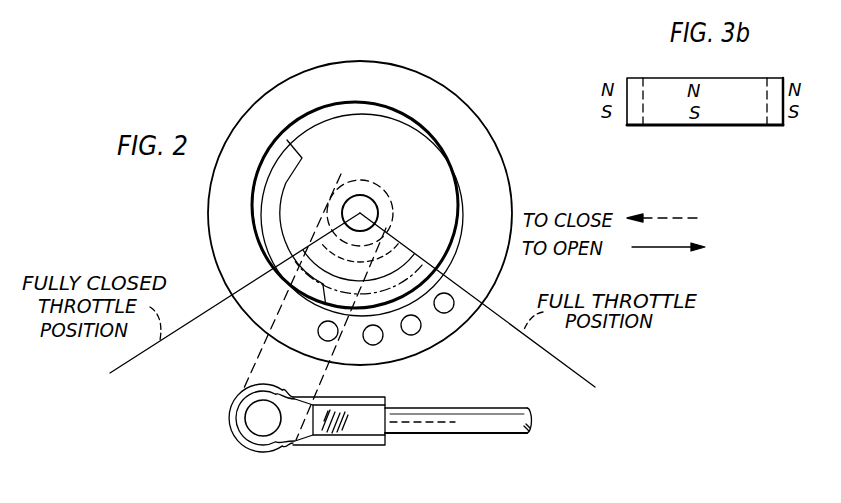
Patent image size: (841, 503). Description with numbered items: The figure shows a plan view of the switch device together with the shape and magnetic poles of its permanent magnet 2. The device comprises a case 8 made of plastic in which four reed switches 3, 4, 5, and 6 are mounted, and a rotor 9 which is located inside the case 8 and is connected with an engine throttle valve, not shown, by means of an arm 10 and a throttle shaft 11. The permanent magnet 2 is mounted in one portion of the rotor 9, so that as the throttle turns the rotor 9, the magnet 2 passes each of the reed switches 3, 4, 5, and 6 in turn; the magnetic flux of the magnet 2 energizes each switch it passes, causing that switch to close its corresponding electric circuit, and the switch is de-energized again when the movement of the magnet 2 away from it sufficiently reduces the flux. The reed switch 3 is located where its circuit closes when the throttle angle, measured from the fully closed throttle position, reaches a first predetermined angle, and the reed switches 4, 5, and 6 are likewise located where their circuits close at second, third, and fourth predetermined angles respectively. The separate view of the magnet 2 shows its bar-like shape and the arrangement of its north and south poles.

In FIG. 2, the permanent magnet 2 is at (283, 190).
In FIG. 3b, the permanent magnet 2 is at (653, 88).
In FIG. 2, the reed switch 3 is at (318, 330).
In FIG. 2, the reed switch 4 is at (363, 341).
In FIG. 2, the reed switch 5 is at (402, 331).
In FIG. 2, the reed switch 6 is at (438, 312).
In FIG. 2, the case 8 is at (436, 83).
In FIG. 2, the rotor 9 is at (394, 167).
In FIG. 2, the arm 10 is at (255, 364).
In FIG. 2, the throttle shaft 11 is at (448, 436).